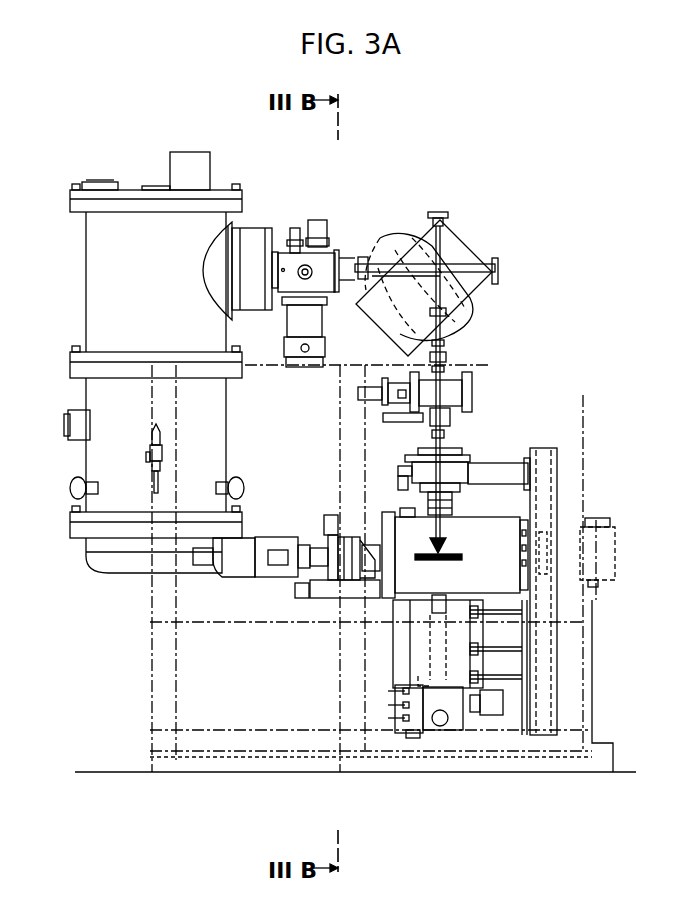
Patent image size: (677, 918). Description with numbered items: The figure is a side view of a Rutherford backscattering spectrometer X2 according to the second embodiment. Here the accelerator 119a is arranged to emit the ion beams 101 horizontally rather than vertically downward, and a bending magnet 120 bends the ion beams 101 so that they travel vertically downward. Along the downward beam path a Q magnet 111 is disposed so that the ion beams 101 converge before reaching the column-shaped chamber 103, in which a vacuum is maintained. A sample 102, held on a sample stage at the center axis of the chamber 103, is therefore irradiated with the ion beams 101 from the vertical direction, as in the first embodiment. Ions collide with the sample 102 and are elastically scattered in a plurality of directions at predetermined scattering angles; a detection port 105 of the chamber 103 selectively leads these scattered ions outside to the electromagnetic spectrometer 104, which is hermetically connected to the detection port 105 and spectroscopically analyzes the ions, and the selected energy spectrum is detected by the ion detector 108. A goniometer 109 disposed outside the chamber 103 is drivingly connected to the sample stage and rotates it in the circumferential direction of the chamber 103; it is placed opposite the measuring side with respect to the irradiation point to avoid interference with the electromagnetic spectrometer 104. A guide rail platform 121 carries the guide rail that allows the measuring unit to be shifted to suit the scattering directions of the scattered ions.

The accelerator 119a is at (128, 190).
The Rutherford backscattering spectrometer X2 is at (496, 190).
The bending magnet 120 is at (470, 250).
The Q magnet 111 is at (462, 452).
The ion beams 101 is at (404, 467).
The chamber 103 is at (478, 515).
The sample 102 is at (440, 557).
The guide rail platform 121 is at (548, 458).
The electromagnetic spectrometer 104 is at (393, 648).
The ion detector 108 is at (410, 735).
The goniometer 109 is at (268, 578).
The detection port 105 is at (393, 603).